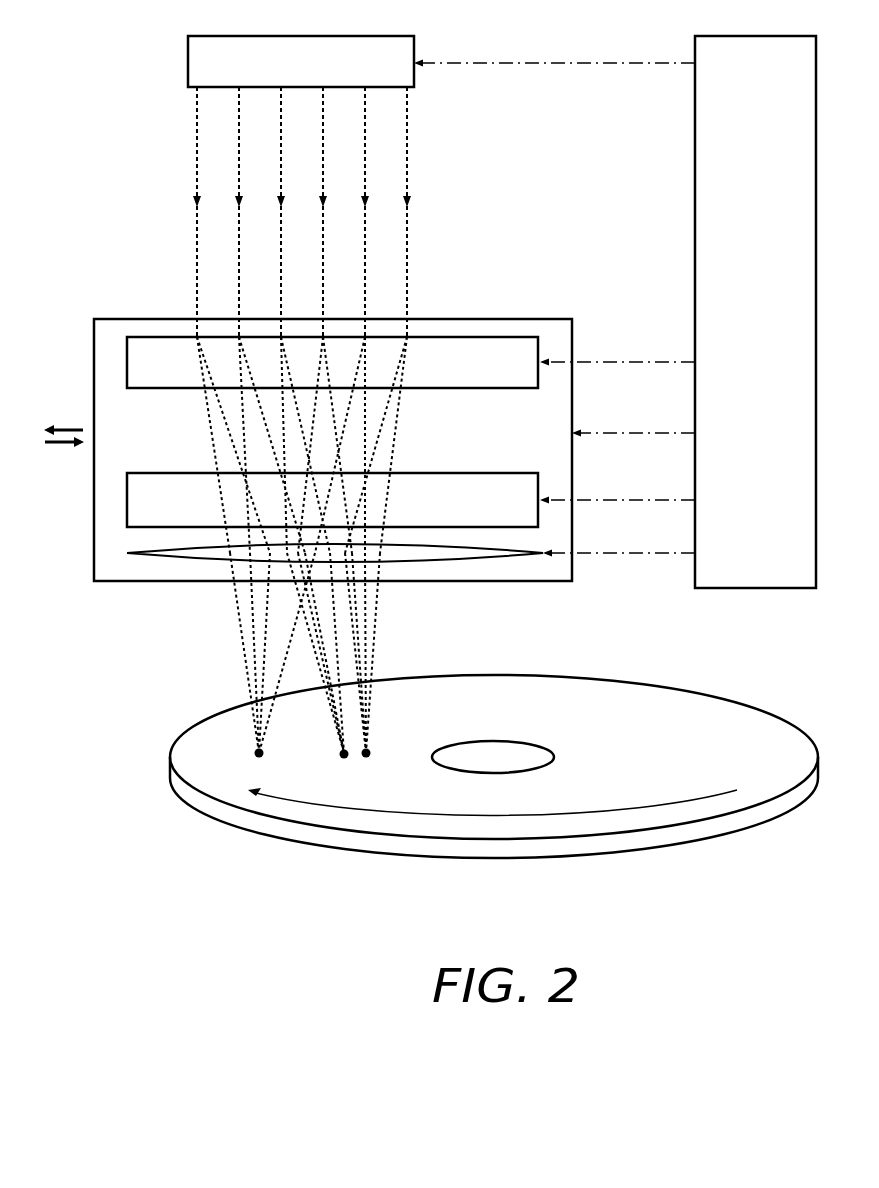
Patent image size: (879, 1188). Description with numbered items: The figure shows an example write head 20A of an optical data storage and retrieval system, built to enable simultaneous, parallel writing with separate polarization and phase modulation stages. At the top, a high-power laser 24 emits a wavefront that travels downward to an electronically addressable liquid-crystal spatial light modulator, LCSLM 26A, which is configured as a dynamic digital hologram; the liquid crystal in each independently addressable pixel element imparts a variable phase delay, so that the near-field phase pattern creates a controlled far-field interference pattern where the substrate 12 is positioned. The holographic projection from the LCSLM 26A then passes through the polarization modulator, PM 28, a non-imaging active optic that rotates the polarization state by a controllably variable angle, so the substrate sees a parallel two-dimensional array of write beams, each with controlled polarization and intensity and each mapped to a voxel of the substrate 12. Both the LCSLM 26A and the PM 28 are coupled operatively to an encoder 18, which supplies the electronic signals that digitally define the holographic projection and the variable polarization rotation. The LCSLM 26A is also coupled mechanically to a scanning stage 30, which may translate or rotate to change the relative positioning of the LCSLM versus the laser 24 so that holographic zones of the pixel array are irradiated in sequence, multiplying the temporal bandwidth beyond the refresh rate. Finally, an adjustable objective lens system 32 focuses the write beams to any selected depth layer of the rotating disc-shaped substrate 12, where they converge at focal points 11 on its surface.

The write head 20A is at (58, 133).
The laser 24 is at (348, 73).
The encoder 18 is at (767, 338).
The liquid-crystal spatial light modulator (LCSLM) 26A is at (527, 373).
The scanning stage 30 is at (524, 445).
The polarization modulator (PM) 28 is at (524, 511).
The adjustable objective lens system 32 is at (127, 553).
The substrate 12 is at (737, 768).
The focal points / features 11 is at (315, 763).